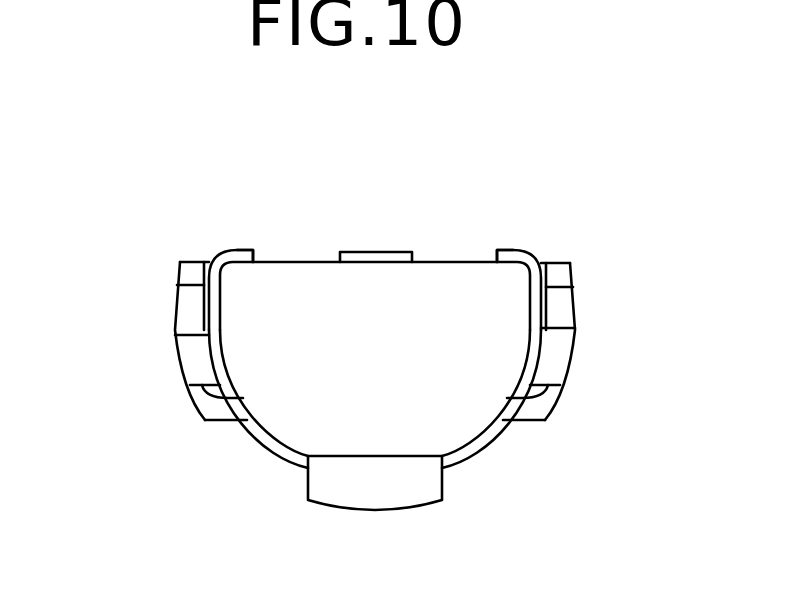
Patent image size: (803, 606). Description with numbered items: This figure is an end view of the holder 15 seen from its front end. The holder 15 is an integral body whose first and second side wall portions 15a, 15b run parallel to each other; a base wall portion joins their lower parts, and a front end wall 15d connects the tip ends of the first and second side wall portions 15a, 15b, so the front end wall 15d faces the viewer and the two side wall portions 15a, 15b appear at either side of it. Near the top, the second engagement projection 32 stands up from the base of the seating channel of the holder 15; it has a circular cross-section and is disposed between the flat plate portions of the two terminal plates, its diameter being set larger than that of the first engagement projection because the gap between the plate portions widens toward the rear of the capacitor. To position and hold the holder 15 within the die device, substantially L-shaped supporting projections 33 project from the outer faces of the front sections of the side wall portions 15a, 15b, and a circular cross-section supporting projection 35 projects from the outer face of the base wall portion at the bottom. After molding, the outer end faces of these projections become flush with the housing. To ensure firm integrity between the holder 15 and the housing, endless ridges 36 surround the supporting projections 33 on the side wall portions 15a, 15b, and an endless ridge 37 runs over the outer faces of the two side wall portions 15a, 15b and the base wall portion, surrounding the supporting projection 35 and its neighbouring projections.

The holder 15 is at (495, 441).
The first side wall portion 15a is at (578, 328).
The second side wall portion 15b is at (178, 336).
The front end wall 15d is at (435, 277).
The second engagement projection 32 is at (383, 252).
The supporting projection 33 is at (193, 272).
The supporting projection 35 is at (372, 493).
The endless ridge 36 is at (240, 250).
The endless ridge 37 is at (267, 446).